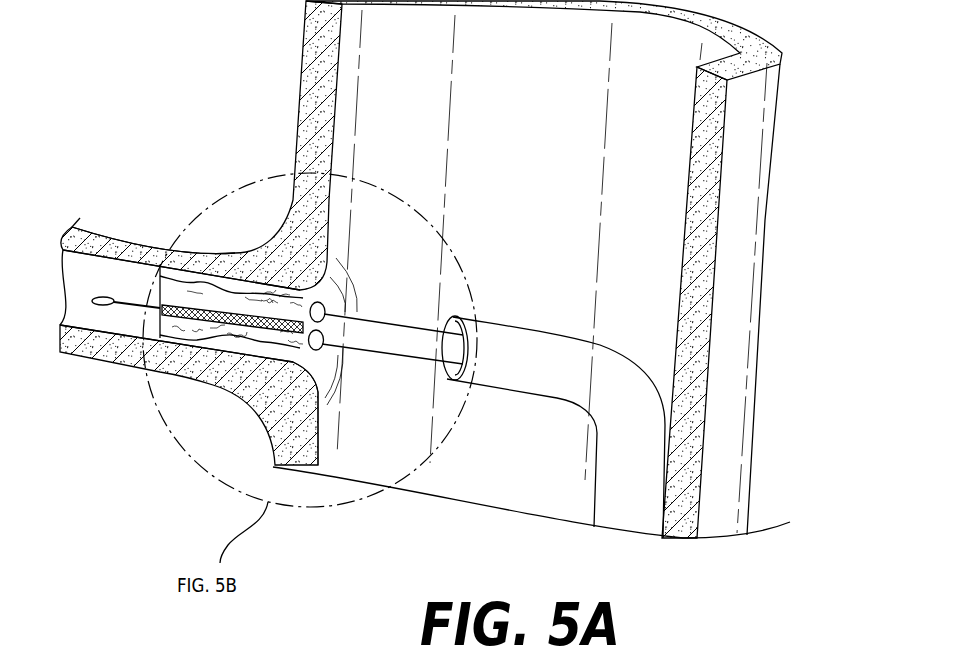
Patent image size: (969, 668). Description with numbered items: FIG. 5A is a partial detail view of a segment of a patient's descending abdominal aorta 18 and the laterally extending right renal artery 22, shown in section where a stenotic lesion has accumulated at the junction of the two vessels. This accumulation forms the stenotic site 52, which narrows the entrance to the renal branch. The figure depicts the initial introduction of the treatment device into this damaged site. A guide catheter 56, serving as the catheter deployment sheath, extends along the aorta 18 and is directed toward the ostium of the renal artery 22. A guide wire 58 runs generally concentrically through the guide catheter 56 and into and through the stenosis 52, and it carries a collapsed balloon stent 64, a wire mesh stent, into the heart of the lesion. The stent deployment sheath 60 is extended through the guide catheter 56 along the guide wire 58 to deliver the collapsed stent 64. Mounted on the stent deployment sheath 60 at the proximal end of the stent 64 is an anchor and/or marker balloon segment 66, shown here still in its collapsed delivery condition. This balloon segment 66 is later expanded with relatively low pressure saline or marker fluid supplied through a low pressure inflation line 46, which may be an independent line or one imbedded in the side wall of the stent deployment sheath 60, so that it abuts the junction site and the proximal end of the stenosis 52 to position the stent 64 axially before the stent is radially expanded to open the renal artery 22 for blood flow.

The aorta 18 is at (768, 198).
The right renal artery 22 is at (93, 230).
The low pressure inflation line 46 is at (223, 425).
The stenotic site 52 is at (142, 368).
The guide catheter 56 is at (537, 330).
The guide wire 58 is at (140, 303).
The stent deployment sheath 60 is at (394, 324).
The wire mesh stent 64 is at (203, 303).
The anchor and/or marker balloon segment 66 is at (313, 358).